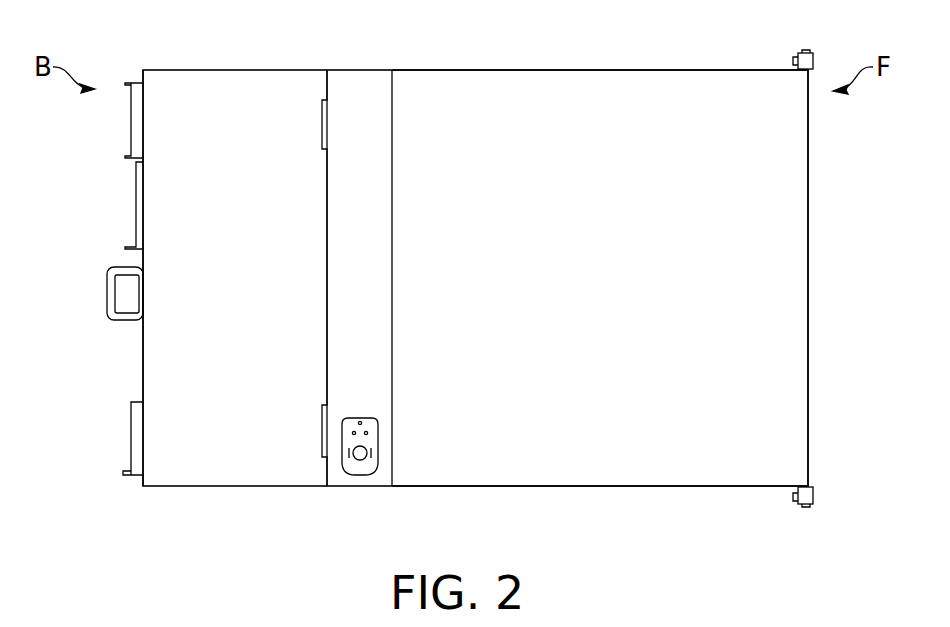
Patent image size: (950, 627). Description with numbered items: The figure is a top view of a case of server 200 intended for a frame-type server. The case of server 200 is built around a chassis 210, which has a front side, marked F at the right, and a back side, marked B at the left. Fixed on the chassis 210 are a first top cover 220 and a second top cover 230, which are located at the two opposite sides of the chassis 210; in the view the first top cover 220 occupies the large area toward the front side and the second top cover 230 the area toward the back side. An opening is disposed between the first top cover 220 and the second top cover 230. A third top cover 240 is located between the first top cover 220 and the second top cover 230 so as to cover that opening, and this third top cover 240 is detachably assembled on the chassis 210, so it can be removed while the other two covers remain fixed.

The case of server 200 is at (502, 285).
The chassis 210 is at (809, 279).
The first top cover 220 is at (705, 85).
The second top cover 230 is at (233, 83).
The third top cover 240 is at (356, 82).